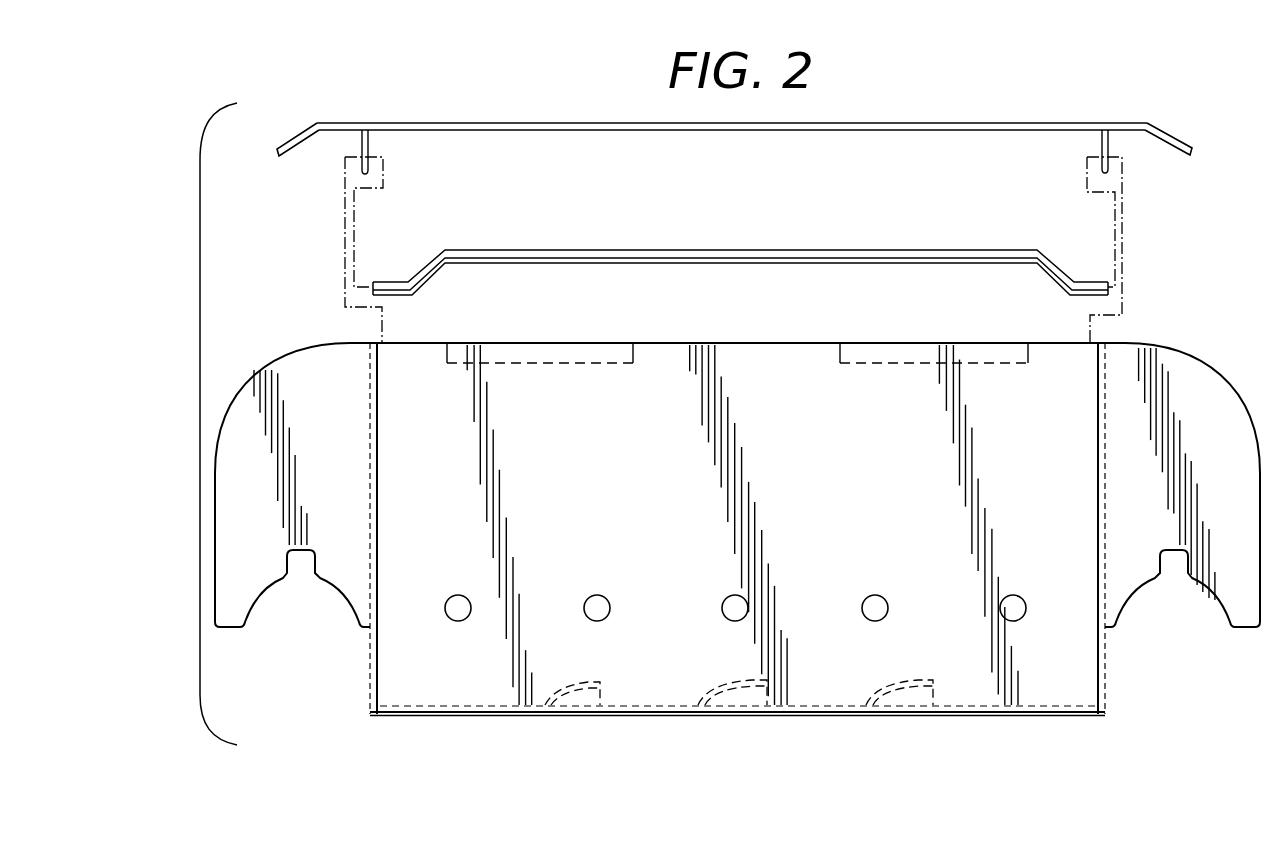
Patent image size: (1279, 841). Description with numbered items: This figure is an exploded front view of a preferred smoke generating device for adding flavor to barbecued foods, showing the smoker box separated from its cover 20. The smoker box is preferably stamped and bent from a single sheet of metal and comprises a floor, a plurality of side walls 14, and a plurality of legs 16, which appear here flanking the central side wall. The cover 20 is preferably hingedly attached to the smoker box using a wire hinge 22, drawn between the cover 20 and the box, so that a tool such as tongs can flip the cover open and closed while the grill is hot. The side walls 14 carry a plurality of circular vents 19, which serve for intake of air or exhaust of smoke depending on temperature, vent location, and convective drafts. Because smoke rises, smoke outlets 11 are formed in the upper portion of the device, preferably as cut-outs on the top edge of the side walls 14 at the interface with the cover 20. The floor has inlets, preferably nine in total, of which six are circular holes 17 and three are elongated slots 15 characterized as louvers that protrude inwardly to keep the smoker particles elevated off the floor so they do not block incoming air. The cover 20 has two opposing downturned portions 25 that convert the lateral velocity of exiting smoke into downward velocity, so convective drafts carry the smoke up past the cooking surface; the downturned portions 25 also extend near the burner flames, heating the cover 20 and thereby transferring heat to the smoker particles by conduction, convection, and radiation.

The cover 20 is at (899, 123).
The downturned portions 25 is at (1175, 136).
The wire hinge 22 is at (767, 252).
The smoke outlets 11 is at (586, 355).
The side walls 14 is at (776, 502).
The legs 16 is at (321, 493).
The circular vents 19 is at (458, 607).
The circular holes 17 is at (427, 714).
The elongated slots 15 is at (585, 707).